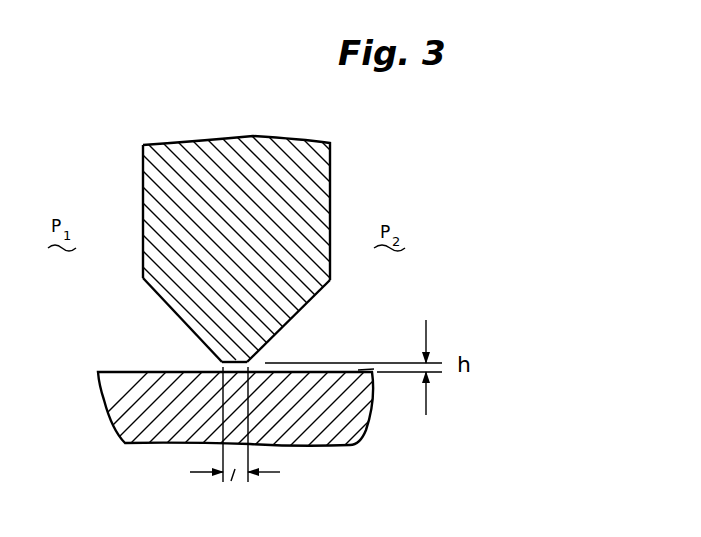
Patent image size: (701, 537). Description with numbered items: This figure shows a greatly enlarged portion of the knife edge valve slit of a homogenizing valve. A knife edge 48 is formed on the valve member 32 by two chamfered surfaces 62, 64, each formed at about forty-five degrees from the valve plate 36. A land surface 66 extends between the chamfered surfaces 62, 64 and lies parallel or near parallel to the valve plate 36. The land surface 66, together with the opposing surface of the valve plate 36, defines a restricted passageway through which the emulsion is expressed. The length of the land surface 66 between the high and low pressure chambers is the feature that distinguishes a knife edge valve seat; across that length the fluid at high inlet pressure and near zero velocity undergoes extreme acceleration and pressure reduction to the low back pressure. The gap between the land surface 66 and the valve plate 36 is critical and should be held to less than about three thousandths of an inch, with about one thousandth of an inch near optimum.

The valve member 32 is at (143, 172).
The chamfered surface 62 is at (175, 312).
The chamfered surface 64 is at (305, 307).
The knife edge 48 is at (212, 367).
The valve plate 36 is at (115, 405).
The land surface 66 is at (221, 380).